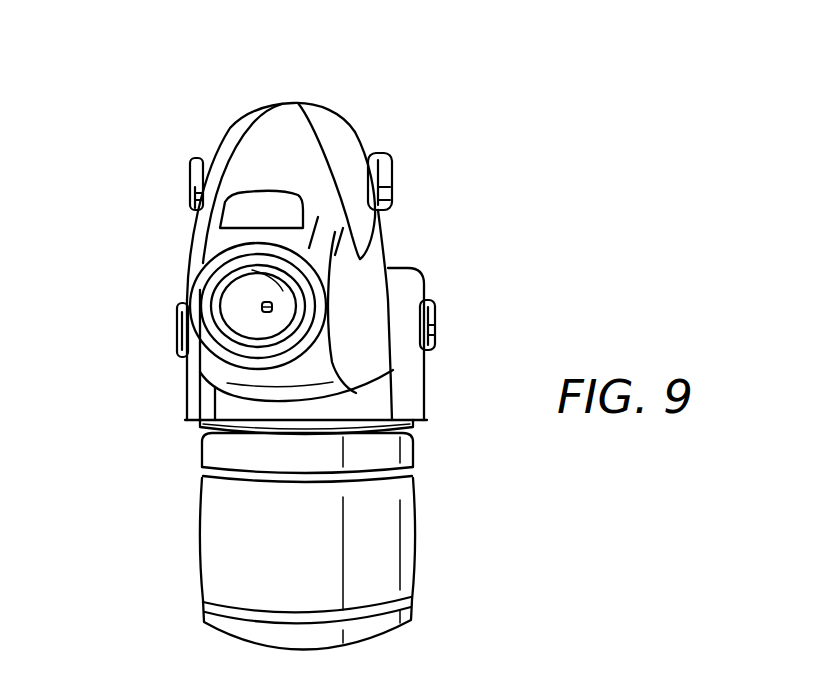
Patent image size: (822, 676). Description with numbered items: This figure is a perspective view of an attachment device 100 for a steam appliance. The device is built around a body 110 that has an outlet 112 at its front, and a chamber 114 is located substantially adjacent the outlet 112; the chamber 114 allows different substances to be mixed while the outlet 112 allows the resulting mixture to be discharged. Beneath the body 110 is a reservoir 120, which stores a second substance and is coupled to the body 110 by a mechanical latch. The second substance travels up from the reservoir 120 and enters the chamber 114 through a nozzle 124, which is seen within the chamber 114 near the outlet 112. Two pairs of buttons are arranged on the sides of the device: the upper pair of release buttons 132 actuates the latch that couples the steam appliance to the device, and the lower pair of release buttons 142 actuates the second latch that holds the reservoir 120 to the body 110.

The attachment device 100 is at (291, 351).
The body 110 is at (367, 267).
The outlet 112 is at (242, 323).
The chamber 114 is at (243, 288).
The reservoir 120 is at (380, 543).
The nozzle 124 is at (268, 313).
The release buttons 132 is at (190, 192).
The release buttons 142 is at (180, 333).